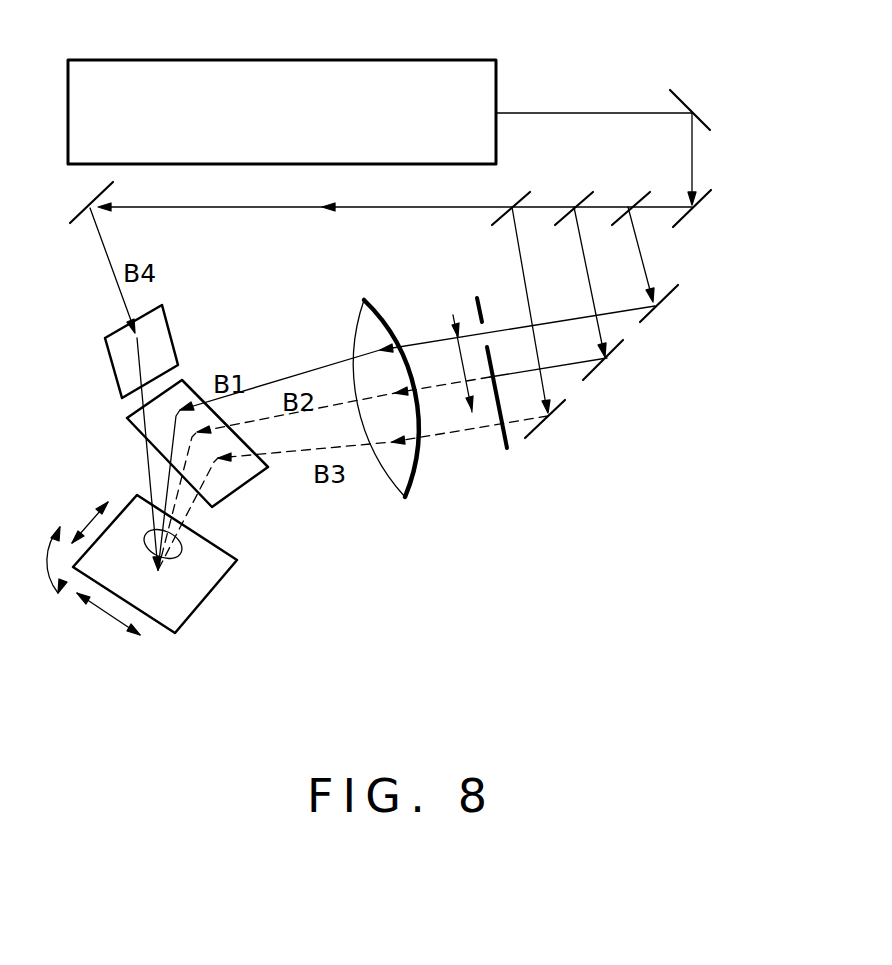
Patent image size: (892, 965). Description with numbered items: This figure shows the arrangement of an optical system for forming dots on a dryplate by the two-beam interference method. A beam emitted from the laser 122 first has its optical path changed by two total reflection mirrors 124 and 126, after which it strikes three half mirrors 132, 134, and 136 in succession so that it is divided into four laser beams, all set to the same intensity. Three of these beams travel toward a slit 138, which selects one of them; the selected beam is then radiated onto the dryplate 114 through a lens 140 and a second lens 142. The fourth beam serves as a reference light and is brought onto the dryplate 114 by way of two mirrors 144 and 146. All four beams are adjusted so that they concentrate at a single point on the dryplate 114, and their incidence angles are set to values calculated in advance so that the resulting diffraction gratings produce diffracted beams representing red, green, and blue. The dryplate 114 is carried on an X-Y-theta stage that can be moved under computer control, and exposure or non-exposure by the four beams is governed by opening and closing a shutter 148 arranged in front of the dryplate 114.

The dryplate 114 is at (210, 580).
The laser 122 is at (389, 59).
The total reflection mirror 124 is at (692, 107).
The total reflection mirror 126 is at (699, 204).
The half mirror 132 is at (637, 192).
The half mirror 134 is at (582, 192).
The half mirror 136 is at (517, 192).
The slit 138 is at (505, 450).
The lens 140 is at (384, 309).
The lens 142 is at (200, 388).
The mirror 144 is at (112, 184).
The mirror 146 is at (108, 356).
The shutter 148 is at (184, 538).